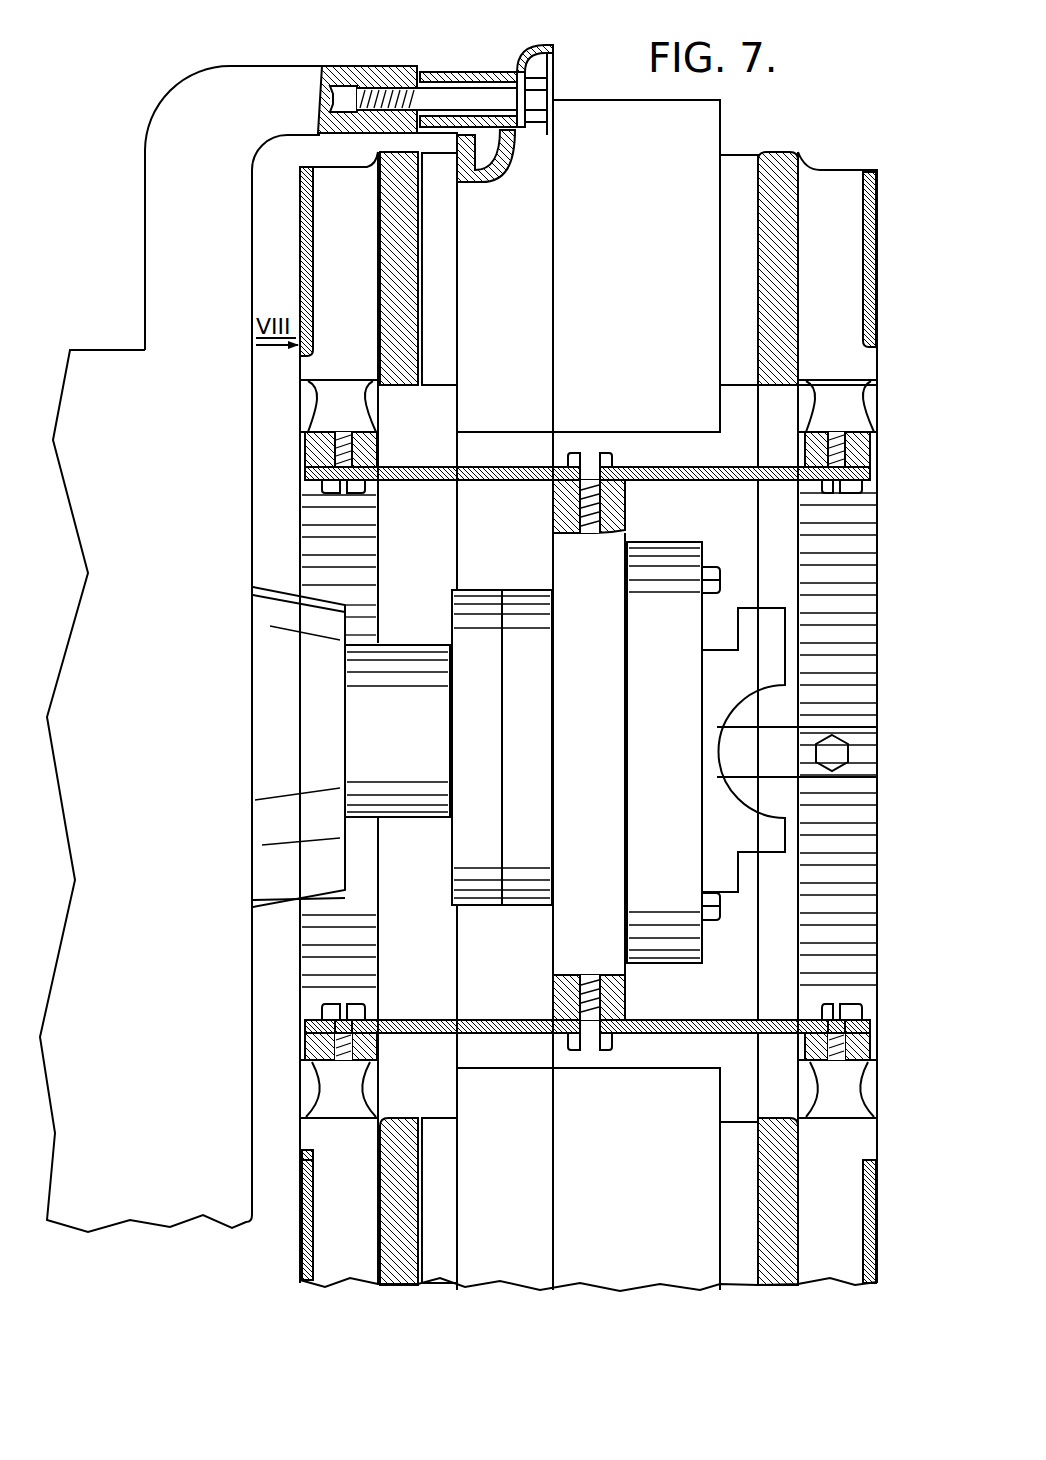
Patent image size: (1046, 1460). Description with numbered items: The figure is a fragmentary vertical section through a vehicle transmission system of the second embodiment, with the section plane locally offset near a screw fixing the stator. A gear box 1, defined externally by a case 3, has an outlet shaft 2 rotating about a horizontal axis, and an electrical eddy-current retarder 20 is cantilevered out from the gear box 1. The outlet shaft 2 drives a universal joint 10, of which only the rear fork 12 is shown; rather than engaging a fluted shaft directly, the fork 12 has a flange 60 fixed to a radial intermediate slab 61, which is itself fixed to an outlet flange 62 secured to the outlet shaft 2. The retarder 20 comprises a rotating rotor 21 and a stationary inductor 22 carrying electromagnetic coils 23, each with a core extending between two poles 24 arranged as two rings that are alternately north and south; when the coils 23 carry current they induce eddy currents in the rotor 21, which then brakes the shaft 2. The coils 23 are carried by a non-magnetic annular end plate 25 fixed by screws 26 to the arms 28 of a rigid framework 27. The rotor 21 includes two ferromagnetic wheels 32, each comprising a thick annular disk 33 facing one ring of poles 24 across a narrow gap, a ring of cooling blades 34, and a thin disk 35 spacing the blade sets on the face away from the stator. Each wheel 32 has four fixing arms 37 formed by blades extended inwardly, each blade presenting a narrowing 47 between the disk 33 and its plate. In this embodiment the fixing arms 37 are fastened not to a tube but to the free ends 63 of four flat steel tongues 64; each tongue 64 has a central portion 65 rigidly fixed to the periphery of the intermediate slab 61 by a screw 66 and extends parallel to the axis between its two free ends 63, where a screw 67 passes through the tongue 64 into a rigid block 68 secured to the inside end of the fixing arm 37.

The gear box 1 is at (84, 346).
The outlet shaft 2 is at (397, 641).
The case 3 is at (117, 372).
The universal joint 10 is at (790, 649).
The rear fork 12 is at (715, 830).
The electrical eddy-current retarder 20 is at (563, 76).
The rotor 21 is at (880, 517).
The inductor 22 is at (724, 122).
The electromagnetic coils 23 is at (638, 148).
The poles 24 is at (440, 237).
The end plate 25 is at (540, 46).
The screws 26 is at (477, 97).
The framework 27 is at (170, 295).
The arms 28 is at (395, 75).
The wheels 32 is at (298, 1232).
The annular disk 33 is at (397, 1247).
The blades 34 is at (343, 230).
The thin disk 35 is at (306, 1263).
The fixing arms 37 is at (306, 413).
The narrowing 47 is at (330, 404).
The flange 60 is at (675, 578).
The radial intermediate slab 61 is at (566, 553).
The outlet flange 62 is at (482, 615).
The free ends 63 is at (312, 470).
The tongues 64 is at (743, 464).
The central portion 65 is at (564, 461).
The screw 66 is at (593, 460).
The screw 67 is at (340, 1007).
The rigid block 68 is at (312, 1053).